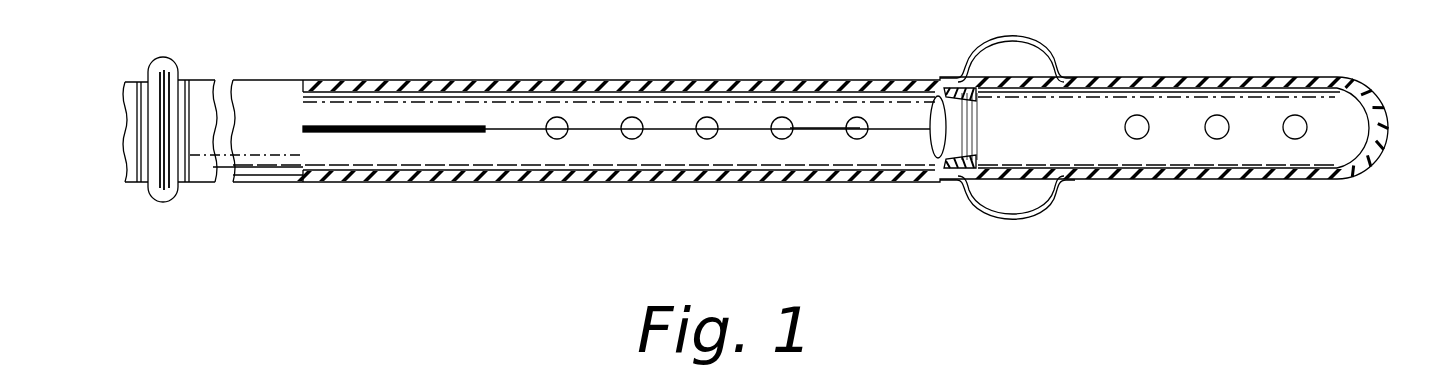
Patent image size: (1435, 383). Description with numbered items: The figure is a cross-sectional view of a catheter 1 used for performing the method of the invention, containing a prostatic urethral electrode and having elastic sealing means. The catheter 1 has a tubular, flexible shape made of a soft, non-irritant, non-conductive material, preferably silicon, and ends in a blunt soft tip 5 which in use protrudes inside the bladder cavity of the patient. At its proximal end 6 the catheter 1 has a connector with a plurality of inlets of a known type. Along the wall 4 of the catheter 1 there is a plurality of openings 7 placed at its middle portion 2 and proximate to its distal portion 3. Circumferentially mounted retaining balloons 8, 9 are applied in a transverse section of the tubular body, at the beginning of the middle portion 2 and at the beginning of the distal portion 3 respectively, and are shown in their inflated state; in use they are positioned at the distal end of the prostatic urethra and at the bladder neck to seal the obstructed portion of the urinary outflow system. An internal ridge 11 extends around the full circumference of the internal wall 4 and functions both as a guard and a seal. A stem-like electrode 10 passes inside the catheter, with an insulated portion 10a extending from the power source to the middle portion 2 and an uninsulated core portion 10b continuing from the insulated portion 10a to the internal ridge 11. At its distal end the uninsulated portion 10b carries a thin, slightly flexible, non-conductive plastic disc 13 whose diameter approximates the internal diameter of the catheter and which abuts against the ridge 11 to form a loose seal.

The catheter 1 is at (508, 110).
The middle portion 2 is at (745, 110).
The distal portion 3 is at (1173, 138).
The wall 4 is at (640, 85).
The blunt soft tip 5 is at (1383, 138).
The proximal end 6 is at (127, 153).
The openings 7 is at (632, 138).
The retaining balloon 8 is at (165, 77).
The retaining balloon 9 is at (1007, 226).
The stem-like electrode 10 is at (488, 137).
The insulated portion 10a is at (367, 137).
The uninsulated portion 10b is at (825, 130).
The internal ridge 11 is at (962, 94).
The plastic disc 13 is at (933, 153).